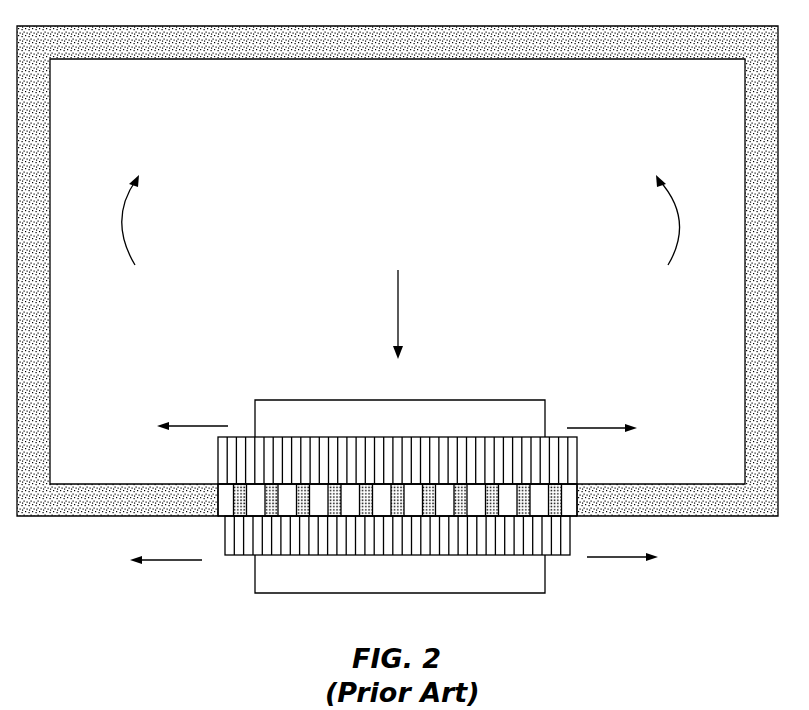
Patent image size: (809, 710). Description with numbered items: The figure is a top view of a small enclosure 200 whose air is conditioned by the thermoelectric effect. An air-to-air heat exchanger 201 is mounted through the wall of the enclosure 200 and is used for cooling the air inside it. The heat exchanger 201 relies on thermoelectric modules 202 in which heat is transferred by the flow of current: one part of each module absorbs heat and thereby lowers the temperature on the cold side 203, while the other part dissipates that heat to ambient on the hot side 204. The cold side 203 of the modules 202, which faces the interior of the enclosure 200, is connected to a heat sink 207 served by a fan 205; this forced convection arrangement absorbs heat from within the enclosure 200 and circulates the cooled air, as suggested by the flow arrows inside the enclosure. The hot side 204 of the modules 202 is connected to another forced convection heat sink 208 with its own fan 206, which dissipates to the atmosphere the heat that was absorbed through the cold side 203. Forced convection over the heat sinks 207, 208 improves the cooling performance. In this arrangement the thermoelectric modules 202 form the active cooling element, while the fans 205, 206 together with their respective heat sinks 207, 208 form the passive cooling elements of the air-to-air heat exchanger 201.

The small enclosure 200 is at (166, 123).
The air-to-air heat exchanger 201 is at (108, 517).
The thermoelectric modules 202 is at (578, 500).
The cold side 203 is at (582, 484).
The hot side 204 is at (218, 522).
The fan 205 is at (468, 400).
The fan 206 is at (255, 575).
The heat sink 207 is at (218, 464).
The heat sink 208 is at (567, 557).